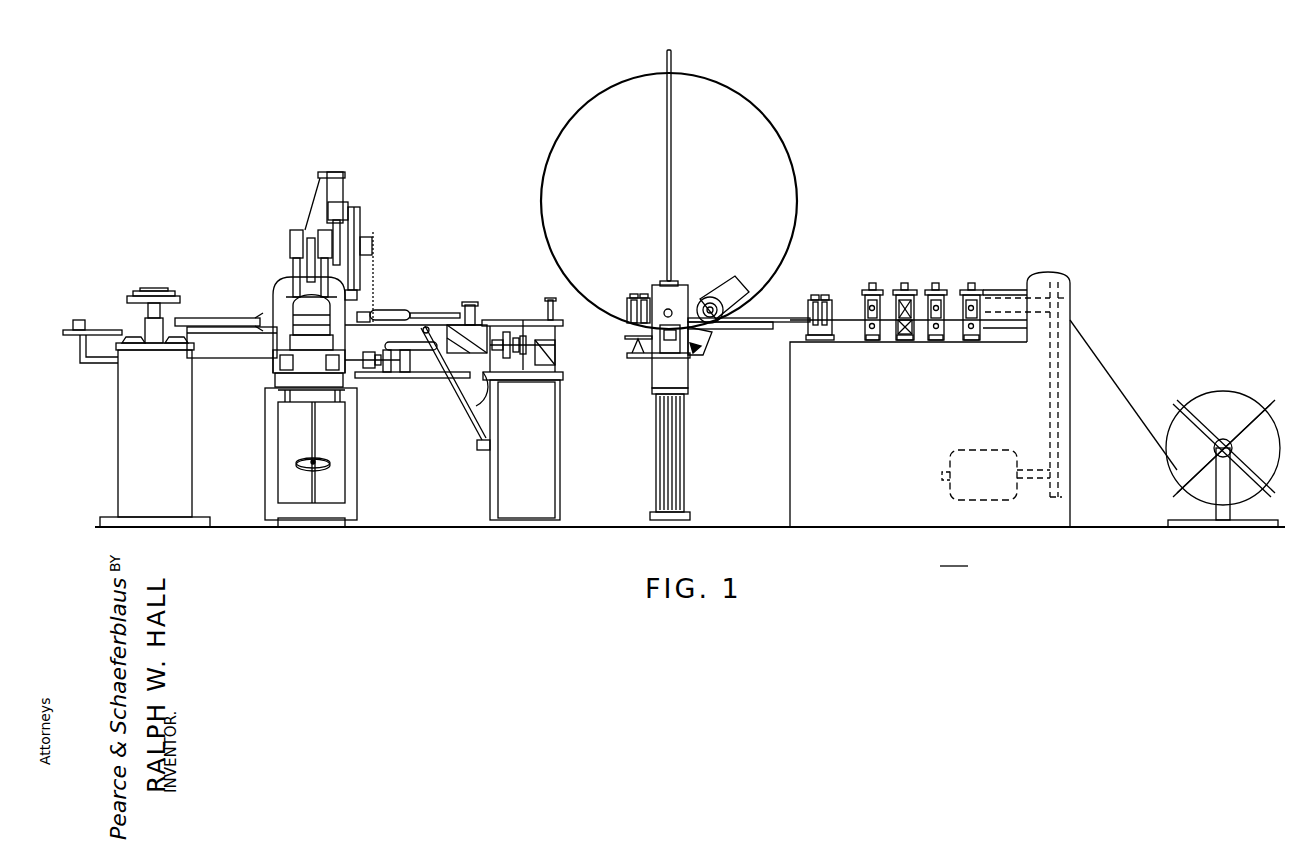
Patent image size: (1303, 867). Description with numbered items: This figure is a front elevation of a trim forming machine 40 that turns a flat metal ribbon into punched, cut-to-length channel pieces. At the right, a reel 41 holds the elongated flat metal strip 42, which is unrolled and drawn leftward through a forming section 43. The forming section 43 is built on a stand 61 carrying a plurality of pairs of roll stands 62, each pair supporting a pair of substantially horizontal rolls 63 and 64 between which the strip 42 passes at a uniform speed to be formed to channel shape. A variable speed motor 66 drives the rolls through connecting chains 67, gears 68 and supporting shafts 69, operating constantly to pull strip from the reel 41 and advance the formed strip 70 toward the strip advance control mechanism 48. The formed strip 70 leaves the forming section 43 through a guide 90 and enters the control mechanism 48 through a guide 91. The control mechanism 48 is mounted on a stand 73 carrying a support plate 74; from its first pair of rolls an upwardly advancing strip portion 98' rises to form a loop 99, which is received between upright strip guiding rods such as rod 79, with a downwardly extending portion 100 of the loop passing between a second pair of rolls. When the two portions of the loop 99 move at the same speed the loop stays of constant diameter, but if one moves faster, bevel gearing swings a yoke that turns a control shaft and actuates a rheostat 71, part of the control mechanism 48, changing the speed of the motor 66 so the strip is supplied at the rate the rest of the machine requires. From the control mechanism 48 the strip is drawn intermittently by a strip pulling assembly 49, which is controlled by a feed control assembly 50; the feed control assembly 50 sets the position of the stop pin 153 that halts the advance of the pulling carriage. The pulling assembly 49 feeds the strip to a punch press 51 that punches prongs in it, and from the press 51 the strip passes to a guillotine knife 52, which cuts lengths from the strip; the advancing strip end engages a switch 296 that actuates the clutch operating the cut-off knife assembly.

The trim forming machine 40 is at (954, 555).
The reel 41 is at (1220, 440).
The flat metal strip 42 is at (1128, 396).
The forming section 43 is at (984, 290).
The strip advance control mechanism 48 is at (688, 285).
The strip pulling assembly 49 is at (472, 310).
The feed control assembly 50 is at (522, 322).
The punch press 51 is at (365, 235).
The guillotine knife 52 is at (178, 296).
The stand 61 is at (833, 527).
The roll stands 62 is at (897, 290).
The roll 63 is at (915, 298).
The roll 64 is at (903, 340).
The variable speed motor 66 is at (988, 442).
The connecting chains 67 is at (1082, 428).
The gears 68 is at (1075, 286).
The supporting shafts 69 is at (1052, 272).
The formed strip 70 is at (858, 318).
The rheostat 71 is at (738, 303).
The stand 73 is at (688, 447).
The support plate 74 is at (690, 358).
The strip guiding rod 79 is at (671, 60).
The guide 90 is at (805, 320).
The guide 91 is at (760, 322).
The upwardly advancing strip portion 98' is at (617, 314).
The loop 99 is at (797, 153).
The downwardly extending portion 100 is at (786, 278).
The stop pin 153 is at (470, 380).
The switch 296 is at (79, 320).